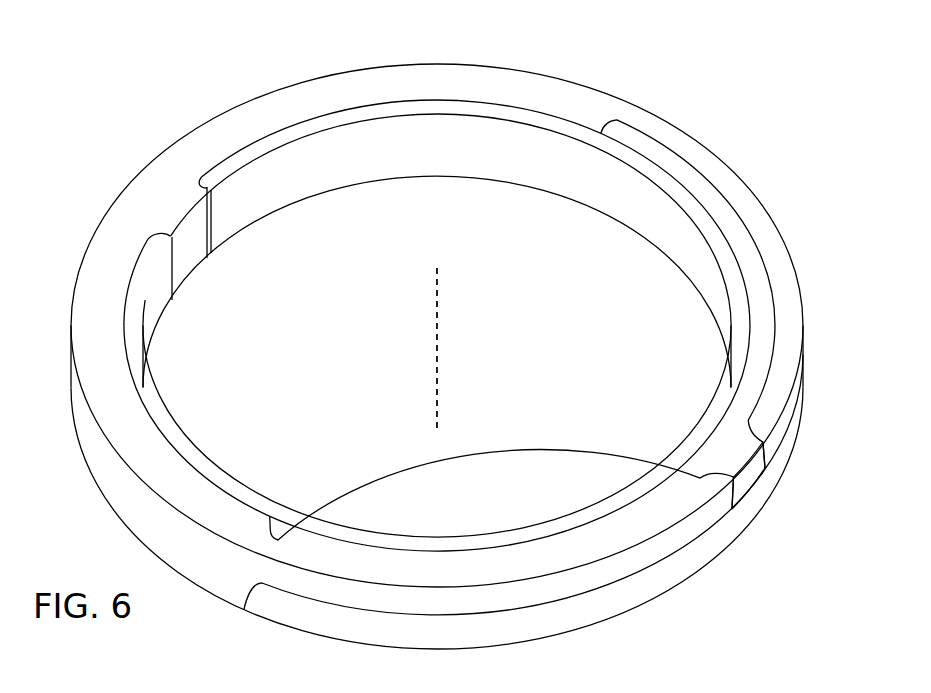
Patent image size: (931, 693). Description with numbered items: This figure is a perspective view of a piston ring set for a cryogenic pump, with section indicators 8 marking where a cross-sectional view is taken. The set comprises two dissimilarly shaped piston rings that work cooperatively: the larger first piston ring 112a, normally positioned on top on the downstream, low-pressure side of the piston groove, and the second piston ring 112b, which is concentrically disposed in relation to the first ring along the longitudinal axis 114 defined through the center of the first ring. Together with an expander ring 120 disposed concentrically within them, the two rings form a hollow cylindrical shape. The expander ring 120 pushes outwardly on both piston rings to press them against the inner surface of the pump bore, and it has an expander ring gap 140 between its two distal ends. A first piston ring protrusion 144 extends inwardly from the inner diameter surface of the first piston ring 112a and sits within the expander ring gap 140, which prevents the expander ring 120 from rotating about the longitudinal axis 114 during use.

The section line 8- 8 is at (240, 104).
The first piston ring 112a is at (530, 92).
The second piston ring 112b is at (565, 613).
The expander ring 120 is at (390, 162).
The first piston ring protrusion 144 is at (183, 267).
The expander ring gap 140 is at (750, 473).
The longitudinal axis 114 is at (439, 352).